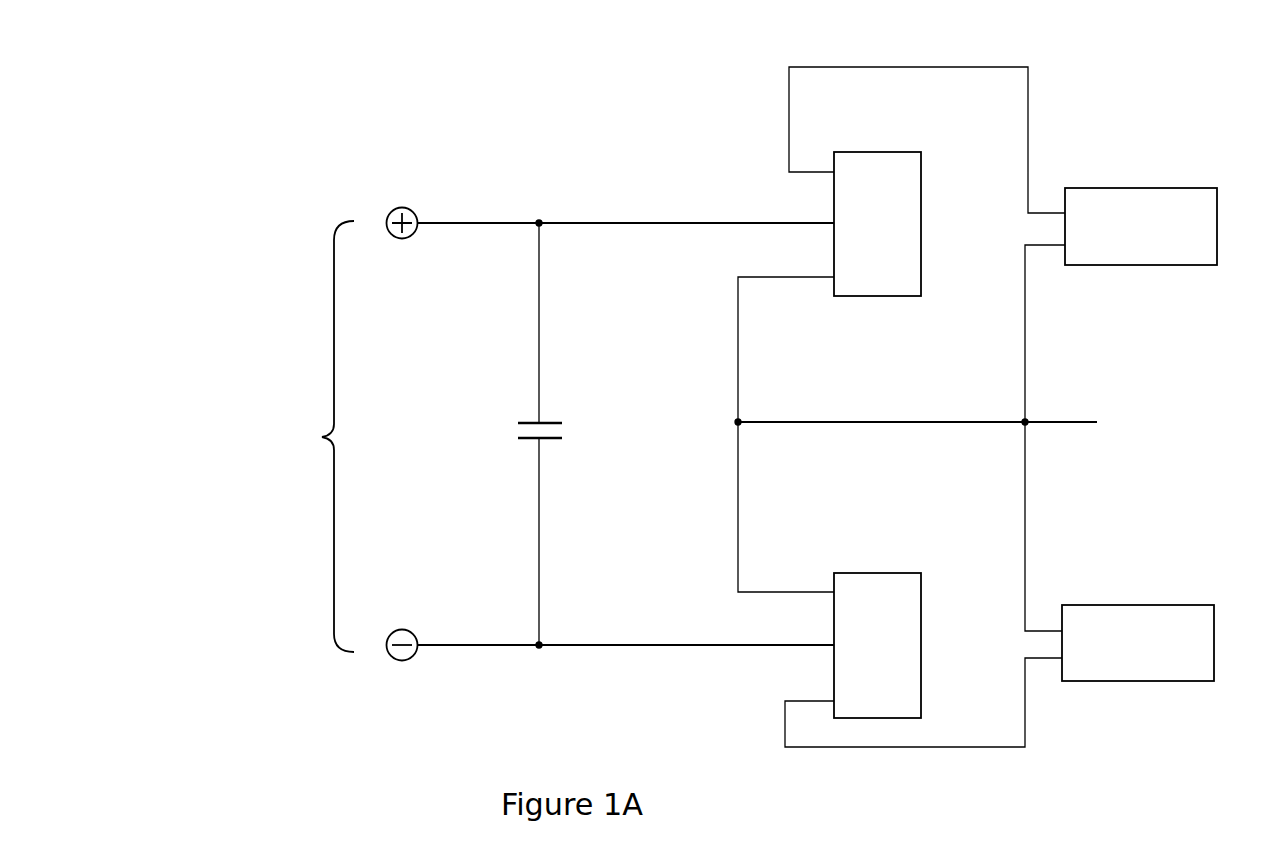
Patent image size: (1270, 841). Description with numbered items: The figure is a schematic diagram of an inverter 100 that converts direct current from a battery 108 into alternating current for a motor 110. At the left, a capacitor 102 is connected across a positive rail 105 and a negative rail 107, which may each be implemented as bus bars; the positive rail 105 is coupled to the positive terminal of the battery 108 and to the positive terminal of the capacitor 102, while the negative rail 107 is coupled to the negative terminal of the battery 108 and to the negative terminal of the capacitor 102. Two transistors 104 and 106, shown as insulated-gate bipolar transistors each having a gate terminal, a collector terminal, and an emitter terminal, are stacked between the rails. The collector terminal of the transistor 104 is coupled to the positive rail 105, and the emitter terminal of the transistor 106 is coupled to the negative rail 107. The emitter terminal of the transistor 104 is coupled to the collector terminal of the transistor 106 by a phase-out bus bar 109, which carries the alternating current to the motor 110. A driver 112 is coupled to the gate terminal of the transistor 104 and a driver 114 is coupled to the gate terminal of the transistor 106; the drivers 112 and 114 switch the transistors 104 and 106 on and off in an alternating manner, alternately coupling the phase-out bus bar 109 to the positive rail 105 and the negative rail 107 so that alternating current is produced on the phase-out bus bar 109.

The inverter 100 is at (250, 108).
The capacitor 102 is at (476, 434).
The transistor 104 is at (877, 152).
The positive rail 105 is at (602, 223).
The transistor 106 is at (877, 573).
The negative rail 107 is at (615, 645).
The battery 108 is at (298, 434).
The phase-out bus bar 109 is at (962, 422).
The motor 110 is at (1125, 420).
The driver 112 is at (1141, 226).
The driver 114 is at (1138, 643).